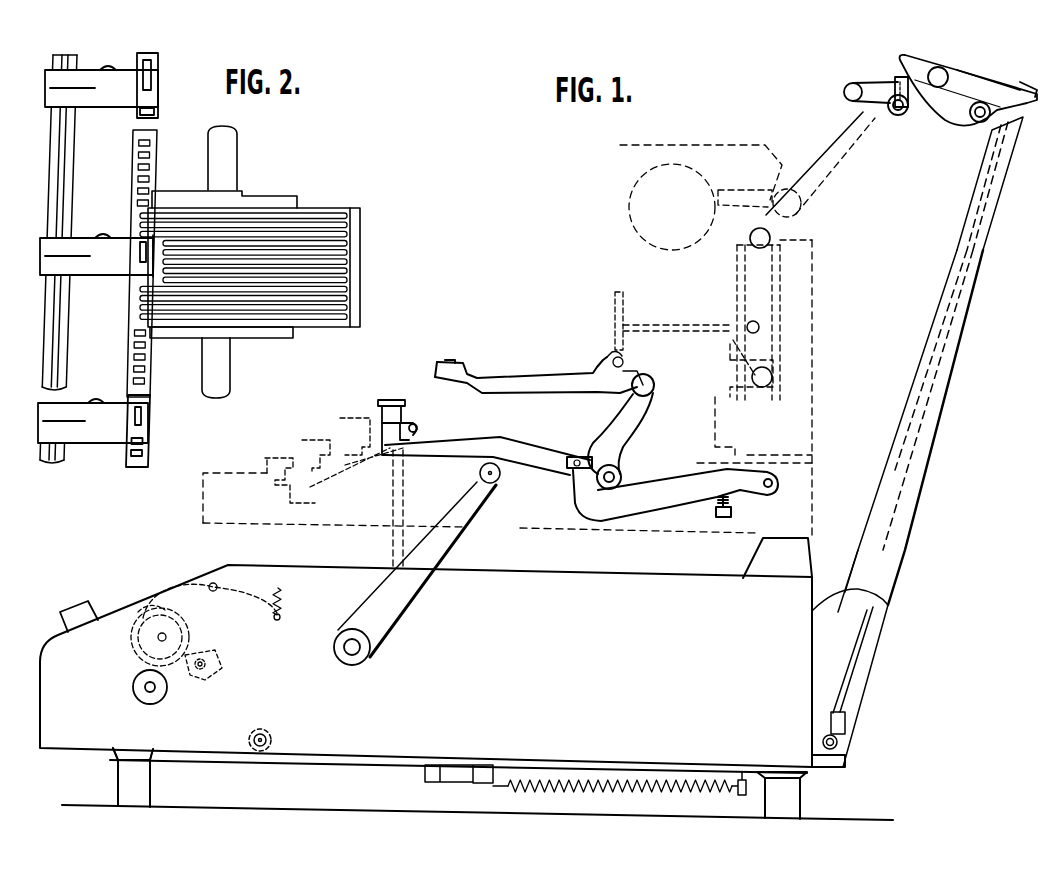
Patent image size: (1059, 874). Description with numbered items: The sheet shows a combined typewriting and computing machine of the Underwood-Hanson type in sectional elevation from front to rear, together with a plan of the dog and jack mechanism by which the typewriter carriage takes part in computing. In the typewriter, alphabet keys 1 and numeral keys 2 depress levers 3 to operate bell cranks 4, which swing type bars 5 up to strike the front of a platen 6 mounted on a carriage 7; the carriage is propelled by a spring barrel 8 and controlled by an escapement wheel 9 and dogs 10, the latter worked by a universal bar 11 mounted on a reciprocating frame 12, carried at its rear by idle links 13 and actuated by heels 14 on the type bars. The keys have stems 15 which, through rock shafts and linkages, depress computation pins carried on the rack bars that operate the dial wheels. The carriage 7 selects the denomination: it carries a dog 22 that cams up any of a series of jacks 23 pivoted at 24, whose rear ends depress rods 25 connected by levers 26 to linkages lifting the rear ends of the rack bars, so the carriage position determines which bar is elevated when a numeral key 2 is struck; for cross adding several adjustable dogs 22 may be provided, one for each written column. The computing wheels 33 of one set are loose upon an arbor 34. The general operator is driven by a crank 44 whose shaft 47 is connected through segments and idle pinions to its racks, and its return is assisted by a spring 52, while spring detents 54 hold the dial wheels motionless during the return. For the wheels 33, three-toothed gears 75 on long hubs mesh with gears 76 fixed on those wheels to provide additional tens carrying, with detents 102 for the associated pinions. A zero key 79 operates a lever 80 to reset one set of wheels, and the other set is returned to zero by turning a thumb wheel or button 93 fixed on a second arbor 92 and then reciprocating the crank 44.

In FIG. 1, the alphabet keys 1 is at (336, 432).
In FIG. 1, the numeral keys 2 is at (388, 400).
In FIG. 1, the levers 3 is at (528, 447).
In FIG. 1, the bell cranks 4 is at (621, 431).
In FIG. 1, the type bars 5 is at (452, 362).
In FIG. 1, the platen 6 is at (630, 209).
In FIG. 1, the carriage 7 is at (752, 200).
In FIG. 1, the spring barrel 8 is at (772, 305).
In FIG. 1, the escapement wheel 9 is at (742, 295).
In FIG. 1, the dogs 10 is at (745, 325).
In FIG. 1, the universal bar 11 is at (621, 345).
In FIG. 1, the reciprocating frame 12 is at (676, 333).
In FIG. 1, the idle links 13 is at (770, 350).
In FIG. 1, the heels 14 is at (608, 352).
In FIG. 1, the key stems 15 is at (405, 485).
In FIG. 2, the dog 22 is at (158, 86).
In FIG. 1, the dog 22 is at (895, 80).
In FIG. 2, the jacks 23 is at (238, 212).
In FIG. 1, the jacks 23 is at (995, 82).
In FIG. 2, the jack pivot 24 is at (215, 315).
In FIG. 1, the jack pivot 24 is at (944, 70).
In FIG. 1, the rods 25 is at (960, 306).
In FIG. 1, the levers 26 is at (830, 712).
In FIG. 1, the computing wheels 33 is at (135, 655).
In FIG. 1, the arbor 34 is at (166, 637).
In FIG. 1, the crank 44 is at (462, 504).
In FIG. 1, the shaft 47 is at (334, 647).
In FIG. 1, the spring 52 is at (596, 793).
In FIG. 1, the spring detents 54 is at (193, 580).
In FIG. 1, the three-toothed gears 75 is at (208, 665).
In FIG. 1, the gears 76 is at (145, 610).
In FIG. 1, the zero key 79 is at (85, 600).
In FIG. 1, the lever 80 is at (160, 758).
In FIG. 1, the arbor 92 is at (147, 690).
In FIG. 1, the thumb wheel or button 93 is at (168, 680).
In FIG. 1, the detents 102 is at (296, 604).